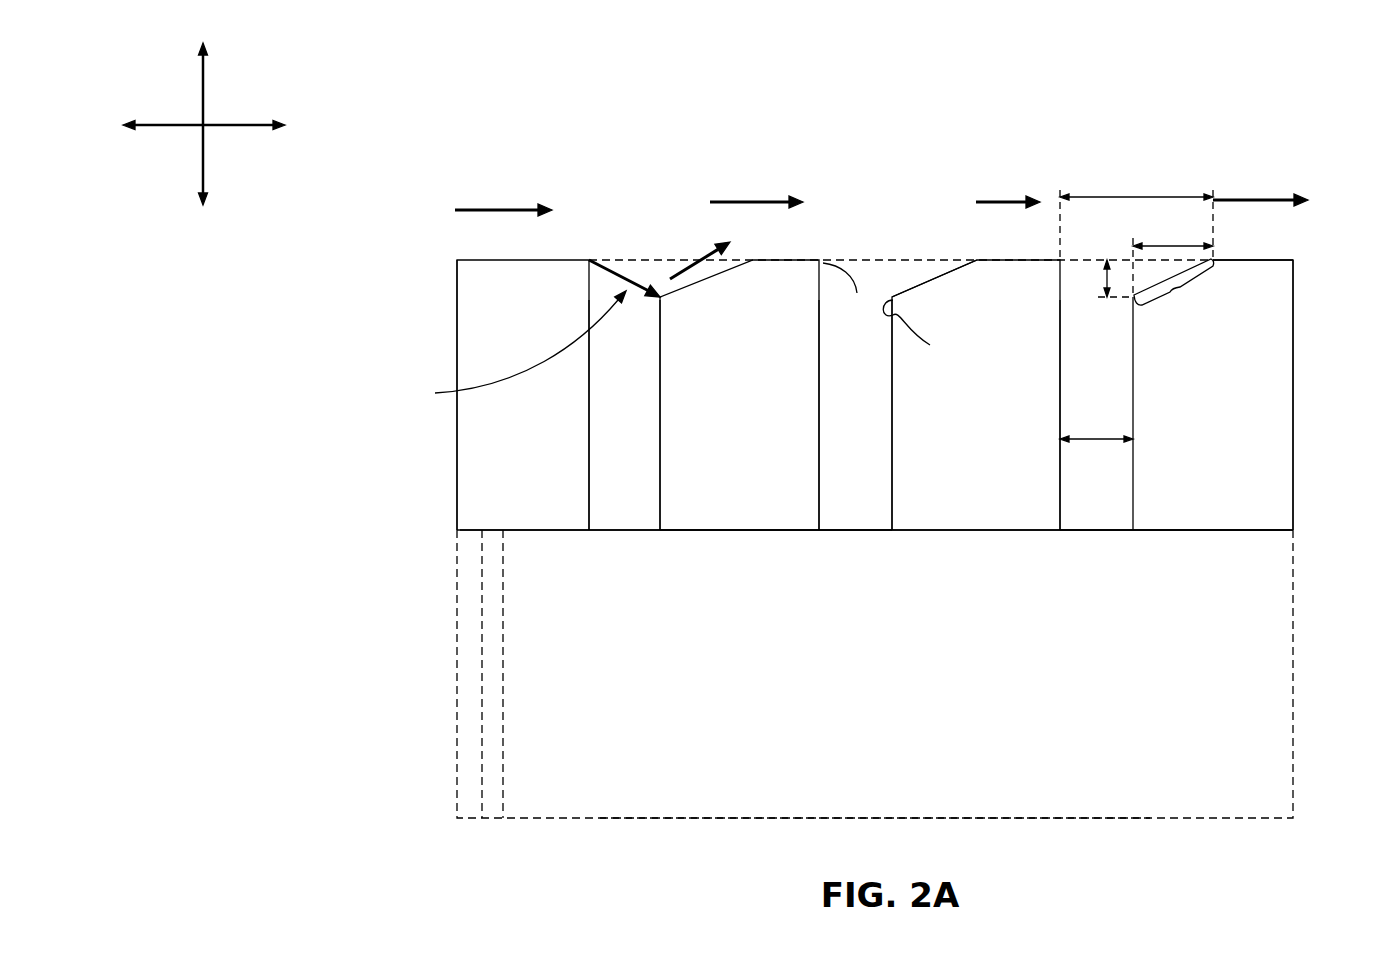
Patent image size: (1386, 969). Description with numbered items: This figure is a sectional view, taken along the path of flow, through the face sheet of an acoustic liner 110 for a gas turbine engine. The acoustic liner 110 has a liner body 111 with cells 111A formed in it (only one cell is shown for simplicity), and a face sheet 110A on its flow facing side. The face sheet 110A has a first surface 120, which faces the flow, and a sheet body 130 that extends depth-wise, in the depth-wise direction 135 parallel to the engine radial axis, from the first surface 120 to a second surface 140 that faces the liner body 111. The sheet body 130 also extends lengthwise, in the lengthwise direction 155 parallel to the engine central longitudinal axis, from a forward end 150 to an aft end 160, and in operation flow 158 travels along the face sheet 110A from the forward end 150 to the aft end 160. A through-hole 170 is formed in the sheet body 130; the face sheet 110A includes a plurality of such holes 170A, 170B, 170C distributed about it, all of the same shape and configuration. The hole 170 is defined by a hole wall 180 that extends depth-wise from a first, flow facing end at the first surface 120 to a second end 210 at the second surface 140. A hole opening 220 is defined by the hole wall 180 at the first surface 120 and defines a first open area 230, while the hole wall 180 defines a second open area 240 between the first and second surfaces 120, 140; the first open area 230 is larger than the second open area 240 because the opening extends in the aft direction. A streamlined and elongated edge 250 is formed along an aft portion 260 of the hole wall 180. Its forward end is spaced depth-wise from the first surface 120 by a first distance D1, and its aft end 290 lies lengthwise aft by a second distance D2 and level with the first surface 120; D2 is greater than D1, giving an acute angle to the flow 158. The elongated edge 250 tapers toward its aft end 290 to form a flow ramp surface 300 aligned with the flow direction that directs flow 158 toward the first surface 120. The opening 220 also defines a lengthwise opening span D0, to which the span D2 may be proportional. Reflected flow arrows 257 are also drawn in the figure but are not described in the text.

The lengthwise direction 155 is at (253, 122).
The depth-wise direction 135 is at (205, 163).
The flow 158 is at (497, 210).
The reflected light ray 257 is at (617, 276).
The aft portion 260 is at (892, 296).
The flow ramp surface 300 is at (928, 280).
The aft end of elongated edge 290 is at (977, 260).
The first open area 230 is at (1140, 196).
The second distance D2 is at (1175, 243).
The first distance D1 is at (1105, 290).
The lengthwise opening span D0 is at (1097, 443).
The first surface 120 is at (1280, 258).
The forward end 150 is at (457, 280).
The aft end 160 is at (1293, 322).
The hole opening 220 is at (507, 350).
The elongated edge 250 is at (1178, 292).
The hole 170A is at (593, 427).
The hole 170B is at (885, 489).
The hole 170C is at (1065, 395).
The face sheet 110A is at (485, 502).
The hole wall 180 is at (658, 518).
The second end 210 is at (850, 503).
The second surface 140 is at (1222, 520).
The sheet body 130 is at (760, 513).
The through-hole 170 is at (880, 517).
The second open area 240 is at (1087, 457).
The acoustic liner 110 is at (457, 633).
The cell 111A is at (503, 763).
The liner body 111 is at (840, 738).